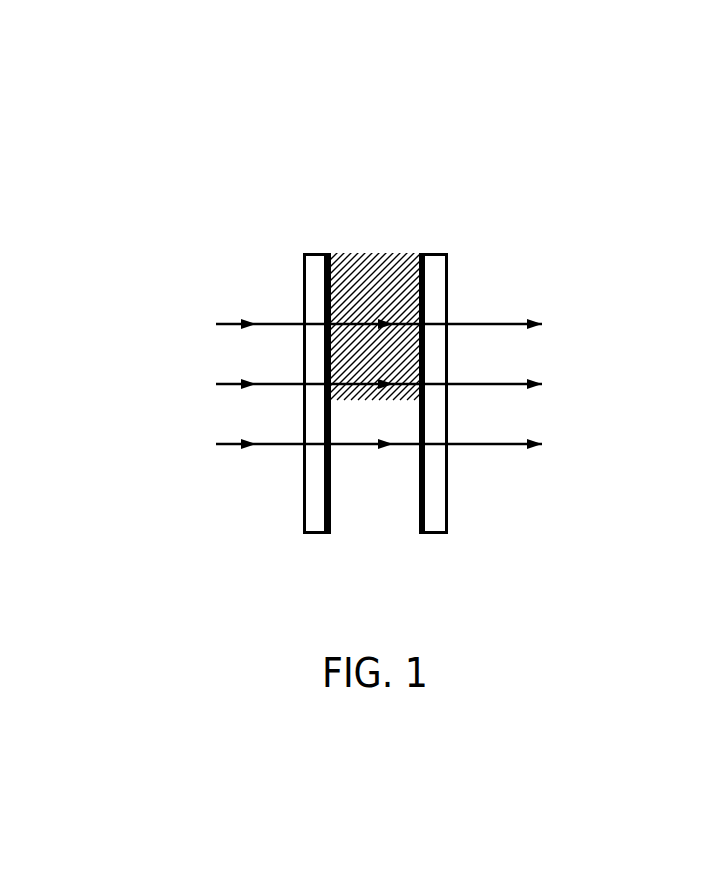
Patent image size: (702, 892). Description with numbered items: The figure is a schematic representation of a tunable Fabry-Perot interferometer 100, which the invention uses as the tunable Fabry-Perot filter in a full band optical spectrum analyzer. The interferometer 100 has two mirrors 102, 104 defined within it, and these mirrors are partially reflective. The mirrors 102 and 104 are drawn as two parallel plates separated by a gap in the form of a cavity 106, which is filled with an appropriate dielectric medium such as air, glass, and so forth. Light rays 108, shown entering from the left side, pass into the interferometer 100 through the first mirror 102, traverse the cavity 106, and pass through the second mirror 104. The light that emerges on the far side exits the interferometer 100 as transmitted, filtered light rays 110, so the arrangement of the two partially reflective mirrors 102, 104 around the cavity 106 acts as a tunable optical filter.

The tunable Fabry-Perot interferometer 100 is at (247, 155).
The mirror 102 is at (333, 262).
The mirror 104 is at (423, 274).
The cavity 106 is at (381, 240).
The light rays 108 is at (178, 375).
The transmitted, filtered light rays 110 is at (590, 383).